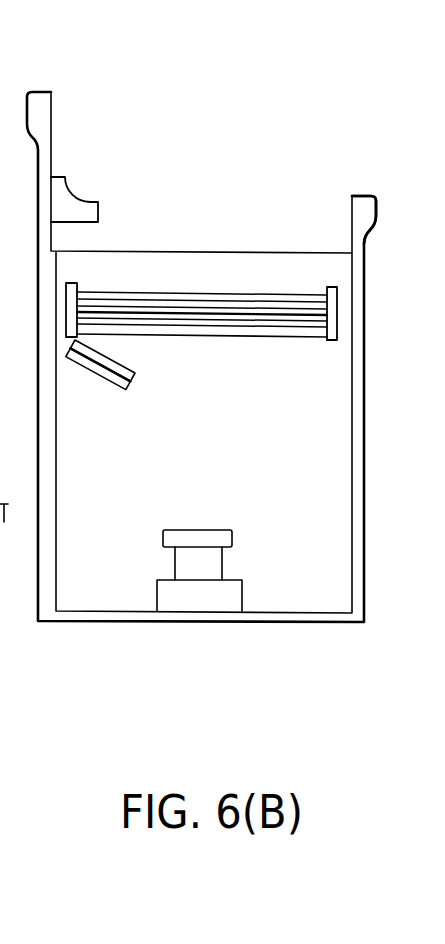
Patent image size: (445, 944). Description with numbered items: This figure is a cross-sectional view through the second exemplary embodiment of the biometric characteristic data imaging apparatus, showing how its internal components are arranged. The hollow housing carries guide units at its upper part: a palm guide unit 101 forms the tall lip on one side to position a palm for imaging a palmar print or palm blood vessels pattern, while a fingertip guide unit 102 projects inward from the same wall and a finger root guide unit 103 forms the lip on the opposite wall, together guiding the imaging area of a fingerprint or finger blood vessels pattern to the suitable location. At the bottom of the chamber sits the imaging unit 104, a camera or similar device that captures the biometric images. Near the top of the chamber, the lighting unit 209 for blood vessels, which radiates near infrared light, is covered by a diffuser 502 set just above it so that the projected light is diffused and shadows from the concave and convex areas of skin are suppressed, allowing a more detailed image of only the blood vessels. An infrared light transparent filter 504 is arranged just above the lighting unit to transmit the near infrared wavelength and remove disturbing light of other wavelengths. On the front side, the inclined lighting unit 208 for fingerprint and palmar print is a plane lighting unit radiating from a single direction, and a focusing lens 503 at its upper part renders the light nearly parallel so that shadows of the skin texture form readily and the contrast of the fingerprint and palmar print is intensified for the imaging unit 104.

The palm guide unit 101 is at (43, 92).
The fingertip guide unit 102 is at (76, 194).
The finger root guide unit 103 is at (362, 196).
The imaging unit 104 is at (229, 580).
The lighting unit for fingerprint and palmar print 208 is at (92, 378).
The lighting unit for blood vessels 209 is at (287, 338).
The diffuser 502 is at (318, 316).
The focusing lens 503 is at (108, 356).
The infrared light transparent filter 504 is at (205, 294).